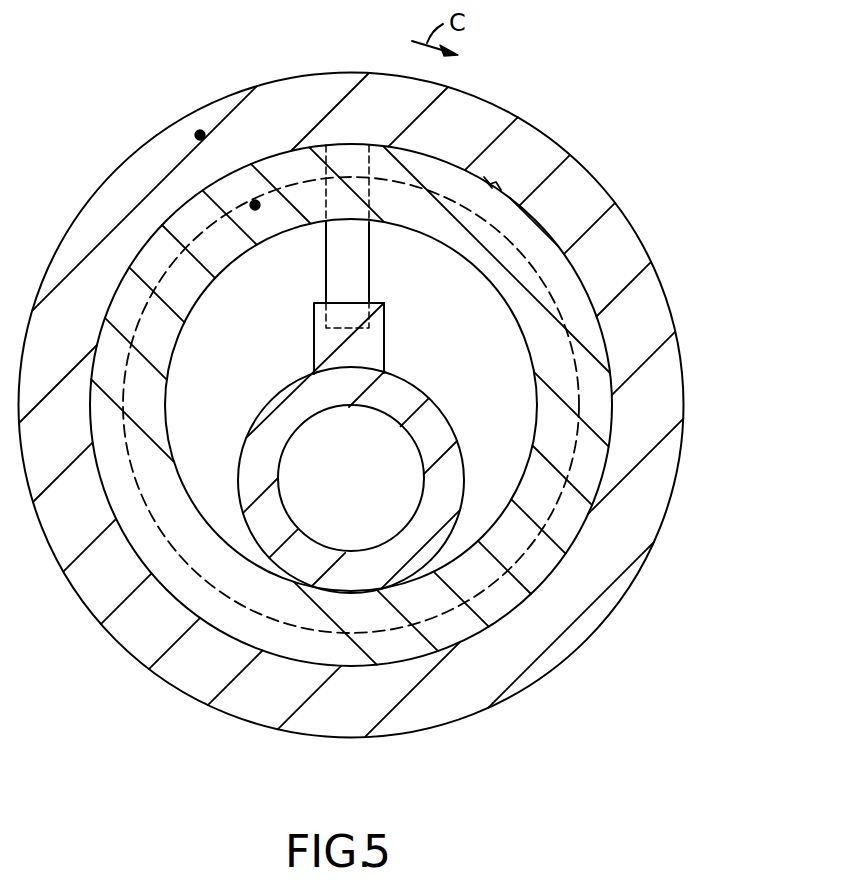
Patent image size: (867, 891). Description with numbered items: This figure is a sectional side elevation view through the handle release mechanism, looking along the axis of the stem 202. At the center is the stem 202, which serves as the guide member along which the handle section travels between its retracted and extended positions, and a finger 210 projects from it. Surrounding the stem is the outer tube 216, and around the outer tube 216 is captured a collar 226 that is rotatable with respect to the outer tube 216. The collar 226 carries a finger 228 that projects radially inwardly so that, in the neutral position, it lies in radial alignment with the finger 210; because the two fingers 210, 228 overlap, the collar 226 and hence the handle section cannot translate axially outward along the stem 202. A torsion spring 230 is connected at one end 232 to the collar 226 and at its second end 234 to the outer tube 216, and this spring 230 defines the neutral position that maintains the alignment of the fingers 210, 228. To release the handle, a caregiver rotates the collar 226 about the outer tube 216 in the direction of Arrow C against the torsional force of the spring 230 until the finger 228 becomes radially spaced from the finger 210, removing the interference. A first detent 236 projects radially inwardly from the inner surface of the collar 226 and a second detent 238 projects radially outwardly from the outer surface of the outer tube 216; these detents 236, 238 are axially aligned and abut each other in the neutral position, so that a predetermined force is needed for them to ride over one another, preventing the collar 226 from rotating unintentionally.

The stem 202 is at (463, 480).
The finger 210 is at (375, 345).
The outer tube 216 is at (547, 570).
The collar 226 is at (540, 682).
The finger 228 is at (335, 283).
The torsion spring 230 is at (190, 570).
The first end of torsion spring 232 is at (200, 135).
The second end of torsion spring 234 is at (255, 210).
The first detent 236 is at (497, 196).
The second detent 238 is at (490, 182).